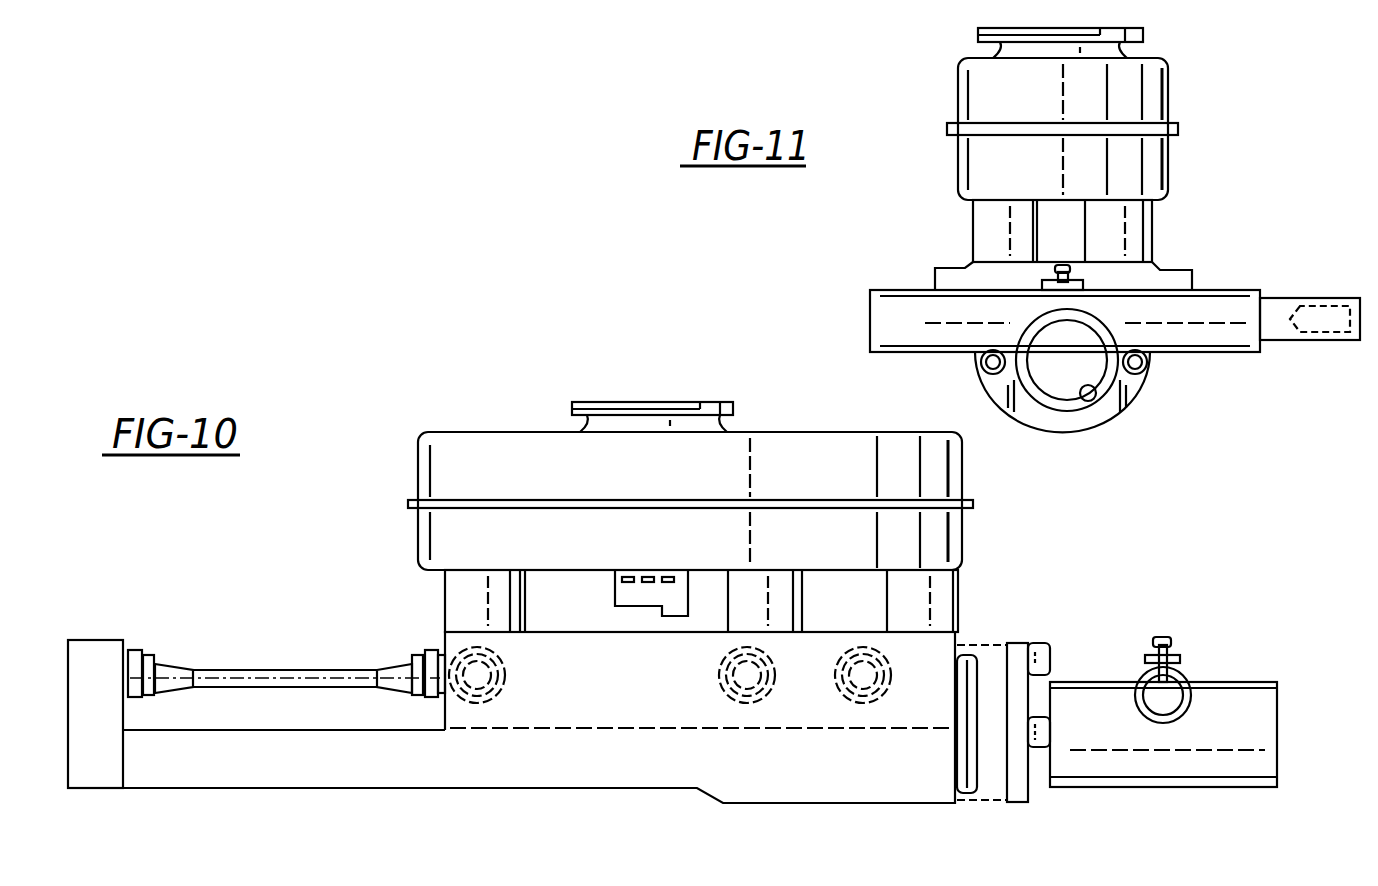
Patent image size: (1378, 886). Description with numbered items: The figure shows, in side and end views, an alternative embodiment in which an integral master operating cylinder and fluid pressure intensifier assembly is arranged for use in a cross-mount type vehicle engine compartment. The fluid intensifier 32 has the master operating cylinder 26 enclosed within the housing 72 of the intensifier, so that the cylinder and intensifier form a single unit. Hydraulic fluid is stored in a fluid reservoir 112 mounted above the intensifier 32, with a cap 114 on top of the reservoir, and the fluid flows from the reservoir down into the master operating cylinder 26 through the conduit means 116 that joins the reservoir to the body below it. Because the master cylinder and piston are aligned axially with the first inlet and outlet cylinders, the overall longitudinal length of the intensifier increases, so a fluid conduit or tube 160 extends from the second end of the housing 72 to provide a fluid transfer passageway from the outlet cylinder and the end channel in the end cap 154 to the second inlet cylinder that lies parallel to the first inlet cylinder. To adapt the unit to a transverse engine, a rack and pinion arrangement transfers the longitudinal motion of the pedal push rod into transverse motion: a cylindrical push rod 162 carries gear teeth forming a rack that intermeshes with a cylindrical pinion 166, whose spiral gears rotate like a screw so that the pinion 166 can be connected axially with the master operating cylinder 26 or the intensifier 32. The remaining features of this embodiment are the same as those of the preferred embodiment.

In FIG. 10, the fluid reservoir 112 is at (435, 457).
In FIG. 11, the fluid reservoir 112 is at (960, 98).
In FIG. 10, the reservoir cap 114 is at (708, 402).
In FIG. 11, the reservoir cap 114 is at (1133, 24).
In FIG. 10, the conduit means 116 is at (447, 605).
In FIG. 11, the conduit means 116 is at (1152, 238).
In FIG. 10, the housing 72 is at (570, 788).
In FIG. 10, the end cap 154 is at (98, 640).
In FIG. 10, the fluid conduit or tube 160 is at (257, 670).
In FIG. 10, the master operating cylinder 26 is at (980, 760).
In FIG. 10, the cylindrical push rod 162 is at (1175, 695).
In FIG. 11, the cylindrical push rod 162 is at (1280, 347).
In FIG. 10, the cylindrical pinion 166 is at (1155, 757).
In FIG. 11, the cylindrical pinion 166 is at (1093, 400).
In FIG. 10, the fluid intensifier 32 is at (1015, 588).
In FIG. 11, the fluid intensifier 32 is at (1228, 147).